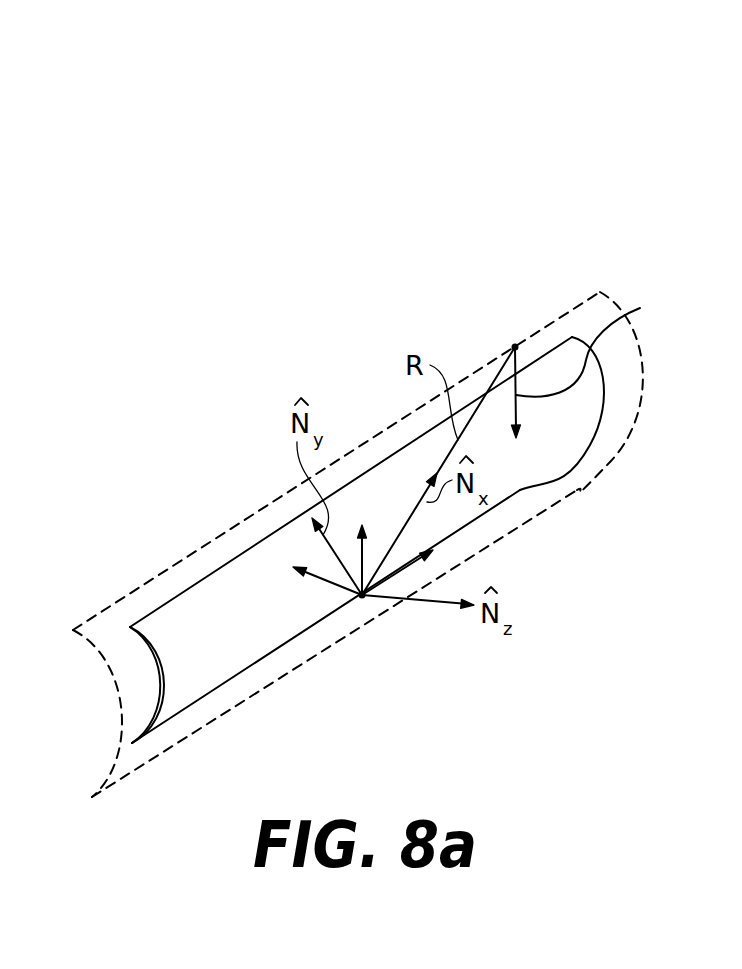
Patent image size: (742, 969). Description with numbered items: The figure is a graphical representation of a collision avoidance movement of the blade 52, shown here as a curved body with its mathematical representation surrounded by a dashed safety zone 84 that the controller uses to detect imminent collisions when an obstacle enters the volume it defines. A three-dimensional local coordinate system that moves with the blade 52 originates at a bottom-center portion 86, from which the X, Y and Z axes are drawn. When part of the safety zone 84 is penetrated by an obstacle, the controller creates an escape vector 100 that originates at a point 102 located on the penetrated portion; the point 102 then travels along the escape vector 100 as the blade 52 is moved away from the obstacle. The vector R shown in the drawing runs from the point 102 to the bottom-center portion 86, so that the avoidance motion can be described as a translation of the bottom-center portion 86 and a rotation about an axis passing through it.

The blade 52 is at (196, 678).
The safety zone 84 is at (130, 590).
The bottom-center portion 86 is at (362, 600).
The escape vector 100 is at (640, 308).
The point 102 is at (515, 347).